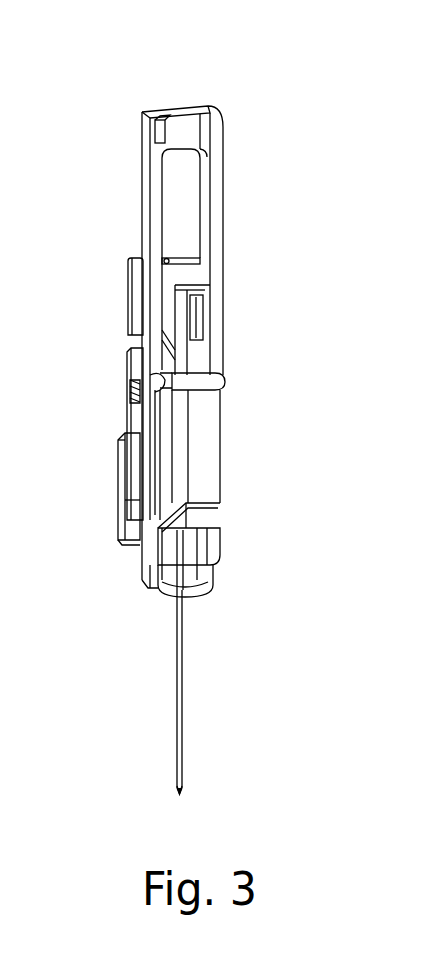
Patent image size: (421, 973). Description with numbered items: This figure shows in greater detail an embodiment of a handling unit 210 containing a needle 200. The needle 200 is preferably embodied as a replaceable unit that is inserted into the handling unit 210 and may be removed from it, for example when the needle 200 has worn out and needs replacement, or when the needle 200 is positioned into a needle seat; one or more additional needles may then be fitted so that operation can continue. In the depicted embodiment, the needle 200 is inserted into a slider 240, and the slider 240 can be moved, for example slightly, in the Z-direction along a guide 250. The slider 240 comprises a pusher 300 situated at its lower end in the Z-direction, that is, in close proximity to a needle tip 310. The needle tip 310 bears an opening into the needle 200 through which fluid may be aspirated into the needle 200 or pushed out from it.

The handling unit 210 is at (205, 103).
The guide 250 is at (122, 499).
The slider 240 is at (218, 545).
The pusher 300 is at (152, 585).
The needle 200 is at (178, 737).
The needle tip 310 is at (183, 790).